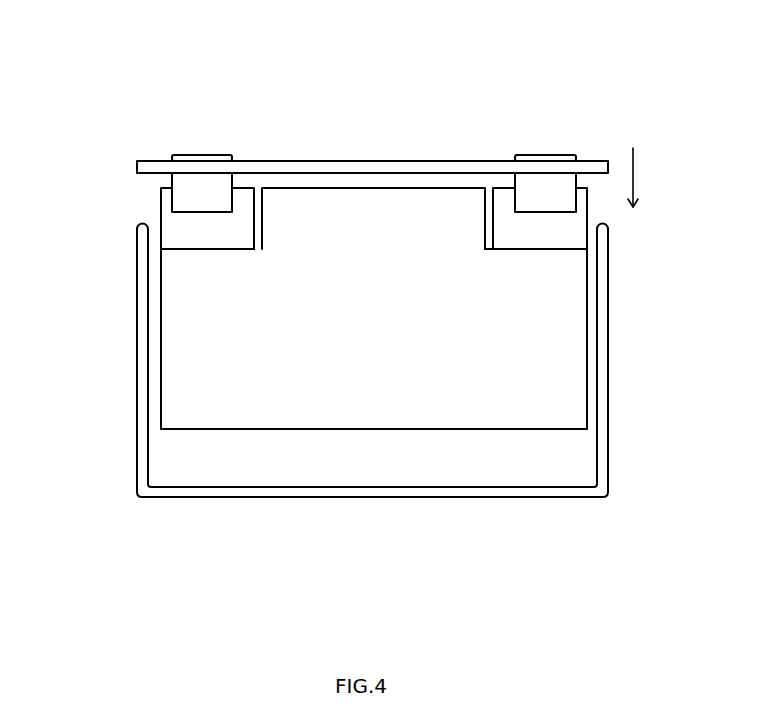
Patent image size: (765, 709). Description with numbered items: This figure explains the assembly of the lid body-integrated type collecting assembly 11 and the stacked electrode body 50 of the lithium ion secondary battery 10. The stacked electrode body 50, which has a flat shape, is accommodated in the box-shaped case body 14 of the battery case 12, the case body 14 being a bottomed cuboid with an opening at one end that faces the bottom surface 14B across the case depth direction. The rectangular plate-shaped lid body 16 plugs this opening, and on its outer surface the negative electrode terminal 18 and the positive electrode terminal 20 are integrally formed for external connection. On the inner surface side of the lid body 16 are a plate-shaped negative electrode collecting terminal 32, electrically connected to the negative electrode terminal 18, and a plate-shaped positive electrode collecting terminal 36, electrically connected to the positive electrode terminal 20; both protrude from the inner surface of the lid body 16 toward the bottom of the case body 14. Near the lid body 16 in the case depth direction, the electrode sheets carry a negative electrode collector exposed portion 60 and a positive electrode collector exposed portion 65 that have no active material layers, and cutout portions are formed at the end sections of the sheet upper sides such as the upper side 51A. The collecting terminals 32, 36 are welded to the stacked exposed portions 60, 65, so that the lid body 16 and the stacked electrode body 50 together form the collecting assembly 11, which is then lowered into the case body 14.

The lithium ion secondary battery 10 is at (616, 54).
The lid body-integrated type collecting assembly 11 is at (596, 154).
The battery case 12 is at (610, 467).
The case body 14 is at (609, 403).
The bottom surface of the case body 14B is at (517, 488).
The lid body 16 is at (295, 161).
The negative electrode terminal 18 is at (212, 155).
The positive electrode terminal 20 is at (555, 155).
The negative electrode collecting terminal 32 is at (192, 188).
The positive electrode collecting terminal 36 is at (533, 188).
The stacked electrode body 50 is at (286, 440).
The upper side of the negative electrode sheet 51A is at (373, 188).
The negative electrode collector exposed portion 60 is at (168, 219).
The positive electrode collector exposed portion 65 is at (575, 219).